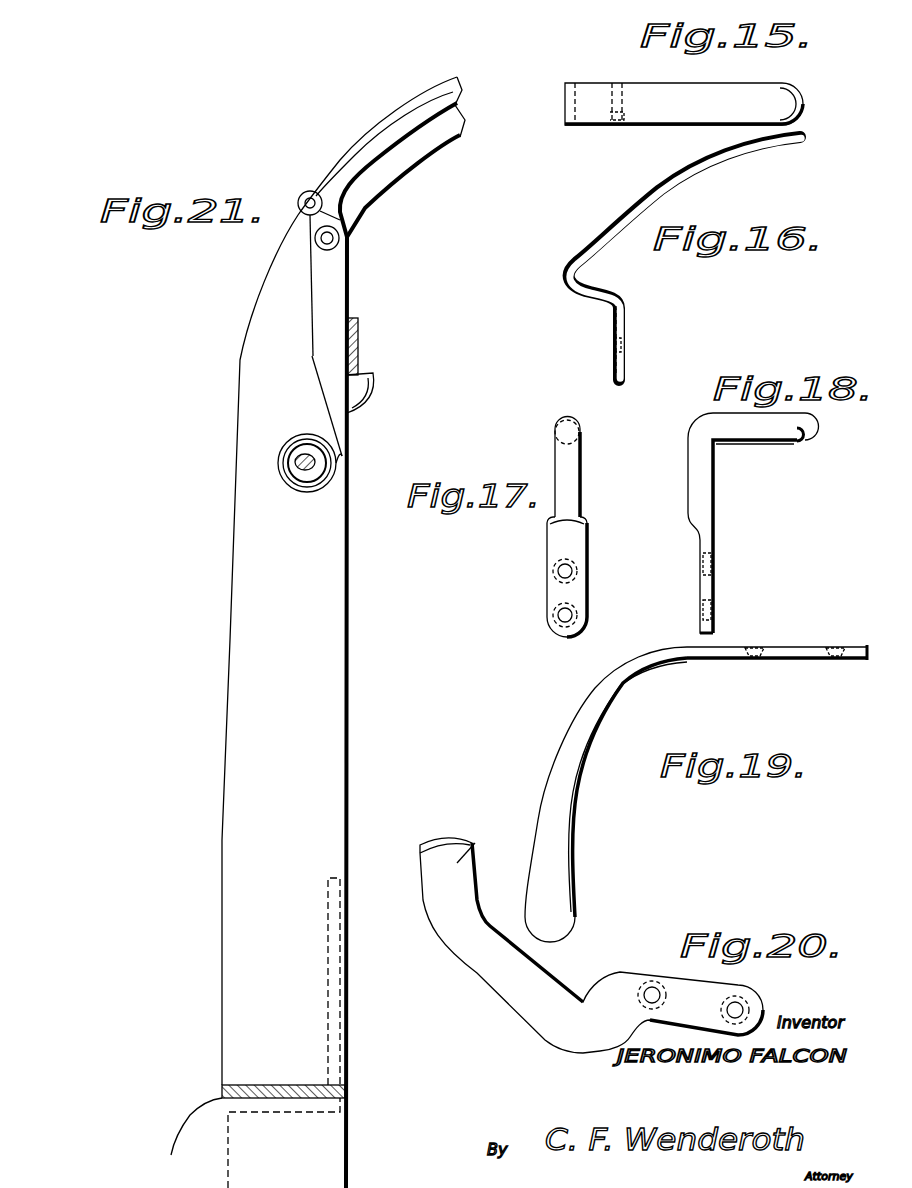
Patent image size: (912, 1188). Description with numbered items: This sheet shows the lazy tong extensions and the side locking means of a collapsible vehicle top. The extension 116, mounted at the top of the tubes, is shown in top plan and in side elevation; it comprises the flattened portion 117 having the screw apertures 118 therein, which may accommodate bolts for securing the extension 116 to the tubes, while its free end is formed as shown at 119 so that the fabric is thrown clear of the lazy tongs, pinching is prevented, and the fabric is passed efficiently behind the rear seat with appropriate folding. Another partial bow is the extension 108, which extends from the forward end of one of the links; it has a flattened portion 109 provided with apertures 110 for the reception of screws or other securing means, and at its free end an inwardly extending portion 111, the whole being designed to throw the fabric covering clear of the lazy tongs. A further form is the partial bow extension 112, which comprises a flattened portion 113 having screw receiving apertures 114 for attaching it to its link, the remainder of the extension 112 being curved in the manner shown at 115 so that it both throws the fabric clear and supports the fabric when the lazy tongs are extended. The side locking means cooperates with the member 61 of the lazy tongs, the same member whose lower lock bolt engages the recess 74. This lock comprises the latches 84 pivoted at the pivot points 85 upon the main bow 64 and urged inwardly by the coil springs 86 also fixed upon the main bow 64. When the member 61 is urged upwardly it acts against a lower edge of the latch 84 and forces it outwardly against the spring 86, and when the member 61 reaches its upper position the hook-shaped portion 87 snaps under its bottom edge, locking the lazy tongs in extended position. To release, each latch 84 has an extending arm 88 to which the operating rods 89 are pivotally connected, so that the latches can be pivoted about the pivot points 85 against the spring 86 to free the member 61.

In FIG. 21, the member 61 is at (360, 333).
In FIG. 21, the main bow 64 is at (318, 632).
In FIG. 21, the recess 74 is at (326, 1059).
In FIG. 21, the latch 84 is at (337, 283).
In FIG. 21, the pivot point 85 is at (347, 237).
In FIG. 21, the coil spring 86 is at (342, 457).
In FIG. 21, the hook-shaped portion 87 is at (357, 385).
In FIG. 21, the extending arm 88 is at (373, 202).
In FIG. 21, the operating rod 89 is at (412, 110).
In FIG. 17, the extension 108 is at (573, 475).
In FIG. 18, the extension 108 is at (702, 495).
In FIG. 17, the flattened portion 109 is at (572, 540).
In FIG. 18, the flattened portion 109 is at (717, 545).
In FIG. 17, the apertures 110 is at (567, 615).
In FIG. 18, the apertures 110 is at (713, 610).
In FIG. 17, the inwardly extending portion 111 is at (560, 413).
In FIG. 18, the inwardly extending portion 111 is at (797, 431).
In FIG. 19, the partial bow extension 112 is at (692, 652).
In FIG. 20, the partial bow extension 112 is at (567, 1013).
In FIG. 19, the flattened portion 113 is at (797, 652).
In FIG. 20, the flattened portion 113 is at (687, 987).
In FIG. 19, the screw receiving apertures 114 is at (833, 643).
In FIG. 20, the screw receiving apertures 114 is at (735, 1010).
In FIG. 19, the curved portion 115 is at (567, 800).
In FIG. 20, the curved portion 115 is at (493, 820).
In FIG. 15, the extension 116 is at (595, 105).
In FIG. 16, the extension 116 is at (640, 274).
In FIG. 15, the flattened portion 117 is at (643, 126).
In FIG. 16, the flattened portion 117 is at (628, 318).
In FIG. 15, the screw apertures 118 is at (653, 76).
In FIG. 16, the screw apertures 118 is at (615, 353).
In FIG. 15, the free end 119 is at (684, 104).
In FIG. 16, the free end 119 is at (747, 143).